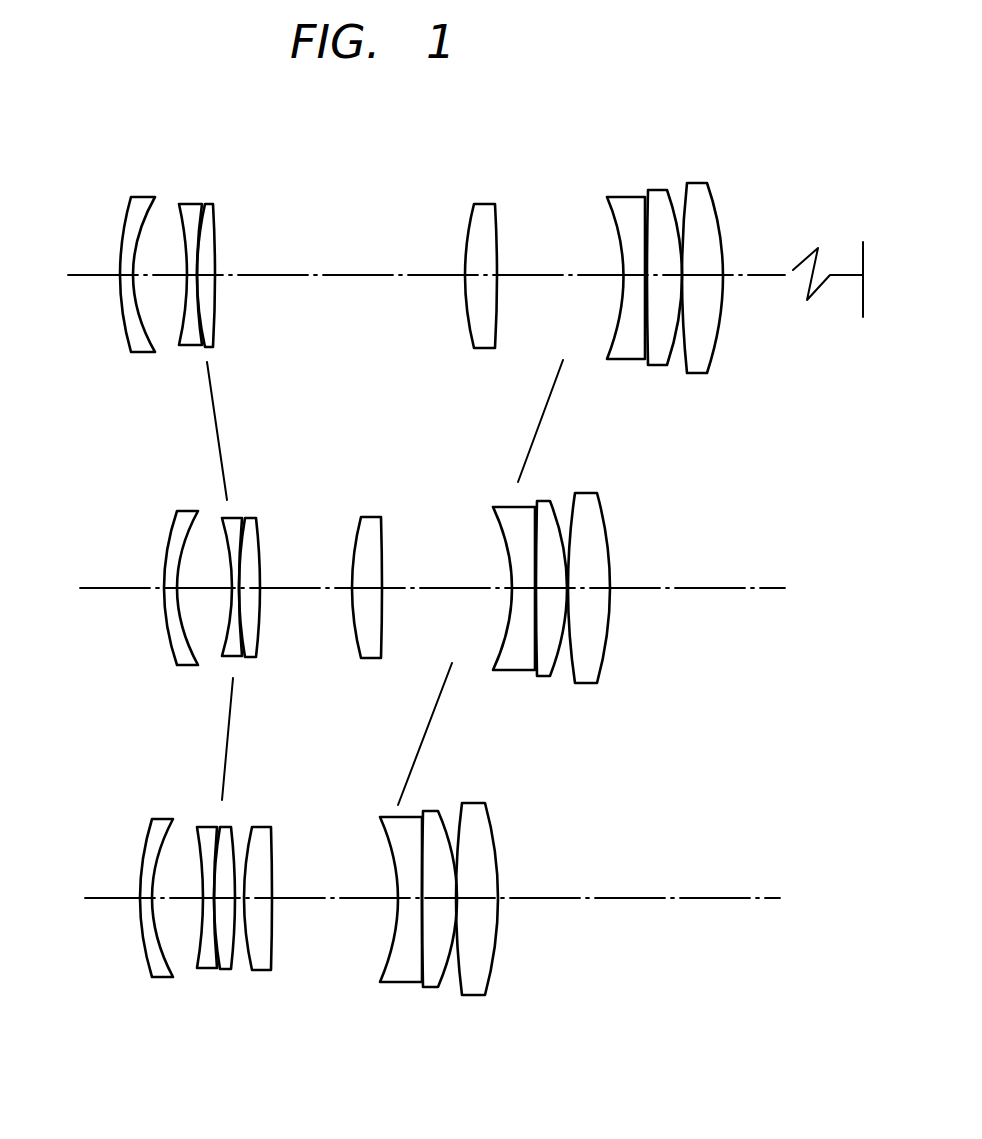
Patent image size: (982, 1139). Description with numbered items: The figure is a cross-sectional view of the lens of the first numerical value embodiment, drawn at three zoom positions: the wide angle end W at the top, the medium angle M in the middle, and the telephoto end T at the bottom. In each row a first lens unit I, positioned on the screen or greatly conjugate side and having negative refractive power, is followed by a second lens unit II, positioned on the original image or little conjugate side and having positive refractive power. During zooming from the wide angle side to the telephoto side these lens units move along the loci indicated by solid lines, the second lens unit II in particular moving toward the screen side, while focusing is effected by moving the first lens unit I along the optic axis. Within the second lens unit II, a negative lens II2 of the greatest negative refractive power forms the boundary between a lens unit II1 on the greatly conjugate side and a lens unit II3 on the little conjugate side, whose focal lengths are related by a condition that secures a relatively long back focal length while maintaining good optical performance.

The first lens unit I is at (232, 160).
The second lens unit II is at (469, 158).
The lens unit on the greatly conjugate side in the second lens unit II1 is at (469, 183).
The negative lens II2 is at (640, 183).
The lens unit on the little conjugate side in the second lens unit II3 is at (717, 183).
The wide angle end W is at (449, 279).
The medium angle M is at (416, 590).
The telephoto end T is at (421, 900).